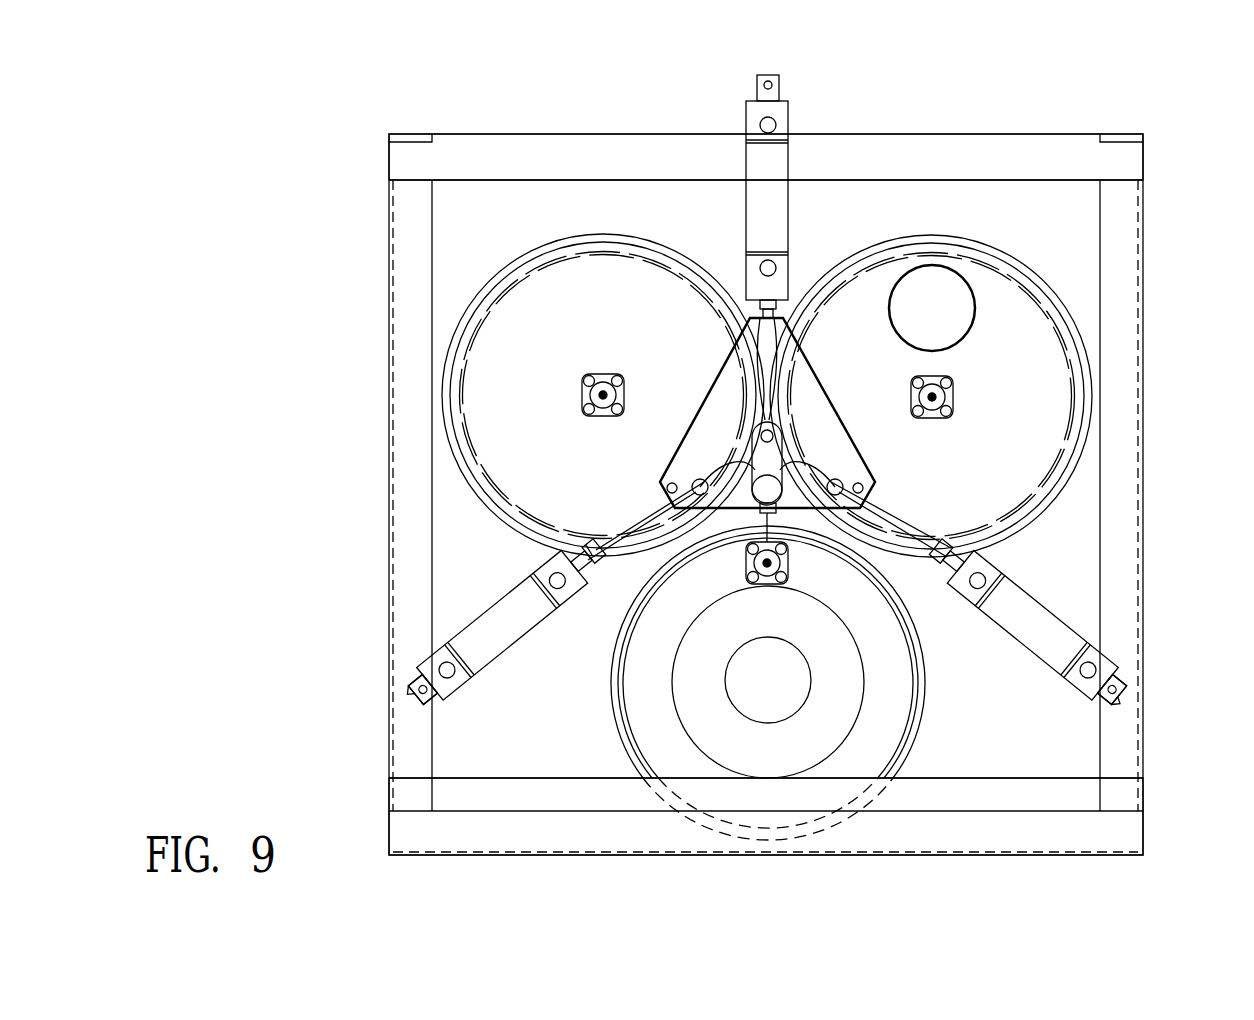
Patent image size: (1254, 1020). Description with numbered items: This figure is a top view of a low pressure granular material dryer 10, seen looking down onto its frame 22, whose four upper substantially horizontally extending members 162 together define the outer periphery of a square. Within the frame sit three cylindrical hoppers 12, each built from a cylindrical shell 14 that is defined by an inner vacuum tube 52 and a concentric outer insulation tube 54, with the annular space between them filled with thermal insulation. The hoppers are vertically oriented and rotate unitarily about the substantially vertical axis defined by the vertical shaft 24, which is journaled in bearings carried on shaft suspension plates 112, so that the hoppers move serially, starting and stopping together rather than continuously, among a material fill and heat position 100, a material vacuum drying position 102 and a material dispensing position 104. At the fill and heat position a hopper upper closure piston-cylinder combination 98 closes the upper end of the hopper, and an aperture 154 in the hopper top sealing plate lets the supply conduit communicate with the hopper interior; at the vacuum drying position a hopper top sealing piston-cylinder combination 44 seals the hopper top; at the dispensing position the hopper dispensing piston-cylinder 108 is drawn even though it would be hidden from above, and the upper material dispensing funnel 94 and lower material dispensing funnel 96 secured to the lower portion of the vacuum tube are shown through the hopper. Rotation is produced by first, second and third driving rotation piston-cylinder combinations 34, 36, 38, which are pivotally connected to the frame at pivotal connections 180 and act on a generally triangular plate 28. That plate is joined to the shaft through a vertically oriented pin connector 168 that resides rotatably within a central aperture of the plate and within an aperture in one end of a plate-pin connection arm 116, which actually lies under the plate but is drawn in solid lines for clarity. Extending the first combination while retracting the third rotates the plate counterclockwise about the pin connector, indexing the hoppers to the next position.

The low pressure granular material dryer 10 is at (1056, 108).
The cylindrical hopper 12 is at (548, 297).
The cylindrical shell 14 is at (531, 257).
The frame 22 is at (1146, 342).
The vertical shaft 24 is at (640, 540).
The generally triangular plate 28 is at (700, 448).
The first driving rotation piston-cylinder combination 34 is at (792, 124).
The second driving rotation piston-cylinder combination 36 is at (1064, 603).
The third driving rotation piston-cylinder combination 38 is at (470, 614).
The hopper top sealing piston-cylinder combination 44 is at (580, 380).
The vacuum tube 52 is at (590, 238).
The insulation tube 54 is at (606, 266).
The upper material dispensing funnel 94 is at (880, 725).
The lower material dispensing funnel 96 is at (695, 716).
The hopper upper closure piston-cylinder combination 98 is at (958, 392).
The material fill and heat position 100 is at (1017, 417).
The material vacuum drying position 102 is at (470, 291).
The material dispensing position 104 is at (748, 742).
The hopper dispensing piston-cylinder 108 is at (792, 565).
The shaft suspension plate 112 is at (783, 460).
The plate-pin connection arm 116 is at (782, 455).
The aperture 154 is at (970, 296).
The upper substantially horizontally extending member 162 is at (498, 156).
The pin connector 168 is at (757, 432).
The pivotal connection 180 is at (765, 82).